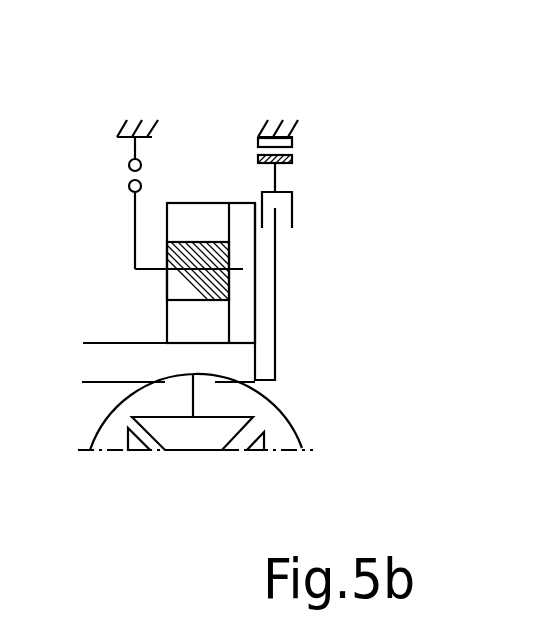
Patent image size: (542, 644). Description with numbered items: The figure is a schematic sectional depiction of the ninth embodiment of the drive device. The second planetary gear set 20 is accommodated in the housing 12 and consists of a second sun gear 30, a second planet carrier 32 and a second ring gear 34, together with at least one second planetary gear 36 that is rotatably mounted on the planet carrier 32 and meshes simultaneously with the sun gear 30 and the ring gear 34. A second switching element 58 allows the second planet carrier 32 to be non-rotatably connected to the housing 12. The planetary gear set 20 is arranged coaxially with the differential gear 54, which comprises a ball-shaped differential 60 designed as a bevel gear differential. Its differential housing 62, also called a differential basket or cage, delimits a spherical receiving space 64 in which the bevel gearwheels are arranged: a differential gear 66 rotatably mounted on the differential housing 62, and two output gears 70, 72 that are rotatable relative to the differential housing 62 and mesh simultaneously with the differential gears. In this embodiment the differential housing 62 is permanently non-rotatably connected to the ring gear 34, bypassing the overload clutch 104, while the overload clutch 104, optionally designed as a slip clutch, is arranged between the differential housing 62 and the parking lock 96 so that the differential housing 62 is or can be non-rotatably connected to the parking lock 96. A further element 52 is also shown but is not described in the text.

The housing 12 is at (153, 120).
The second planetary gear set 20 is at (195, 177).
The second switching element 58 is at (125, 172).
The second ring gear 34 is at (217, 218).
The second planetary gear 36 is at (213, 287).
The second sun gear 30 is at (213, 322).
The second planet carrier 32 is at (150, 270).
The parking lock 96 is at (312, 120).
The overload clutch 104 is at (312, 207).
The housing base 52 is at (102, 383).
The receiving space 64 is at (262, 400).
The differential gear 54 is at (327, 403).
The differential housing 62 is at (278, 422).
The ball-shaped differential 60 is at (305, 443).
The differential gear 66 is at (172, 438).
The output gear 70 is at (142, 448).
The output gear 72 is at (258, 445).